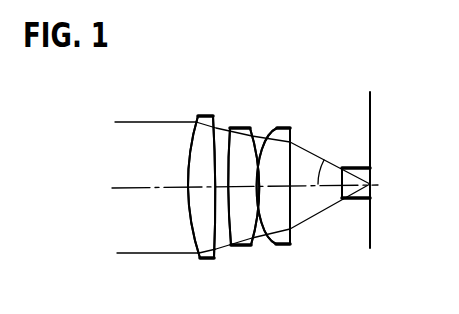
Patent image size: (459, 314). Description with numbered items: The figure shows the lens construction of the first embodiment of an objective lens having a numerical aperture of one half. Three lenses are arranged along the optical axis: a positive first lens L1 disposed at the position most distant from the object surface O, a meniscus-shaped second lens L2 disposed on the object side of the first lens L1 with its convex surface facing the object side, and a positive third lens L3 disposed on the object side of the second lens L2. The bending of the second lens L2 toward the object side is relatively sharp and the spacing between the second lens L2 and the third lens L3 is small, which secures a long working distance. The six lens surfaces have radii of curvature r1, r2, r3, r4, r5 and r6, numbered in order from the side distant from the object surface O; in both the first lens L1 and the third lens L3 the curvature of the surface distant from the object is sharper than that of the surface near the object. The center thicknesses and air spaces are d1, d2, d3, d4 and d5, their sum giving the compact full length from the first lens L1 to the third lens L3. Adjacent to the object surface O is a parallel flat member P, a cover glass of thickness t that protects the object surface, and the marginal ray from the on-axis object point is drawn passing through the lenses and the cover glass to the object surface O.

The first lens L1 is at (201, 113).
The second lens L2 is at (242, 124).
The third lens L3 is at (286, 125).
The radius of curvature of first lens surface r1 is at (196, 244).
The radius of curvature of second lens surface r2 is at (215, 246).
The radius of curvature of third lens surface r3 is at (230, 232).
The radius of curvature of fourth lens surface r4 is at (258, 230).
The radius of curvature of fifth lens surface r5 is at (277, 228).
The radius of curvature of sixth lens surface r6 is at (293, 222).
The center thickness of first lens d1 is at (197, 187).
The air space between first and second lenses d2 is at (221, 148).
The center thickness of second lens d3 is at (257, 162).
The air space between second and third lenses d4 is at (263, 196).
The center thickness of third lens d5 is at (292, 172).
The parallel flat member P is at (358, 168).
The thickness of cover glass t is at (348, 190).
The object surface O is at (370, 113).